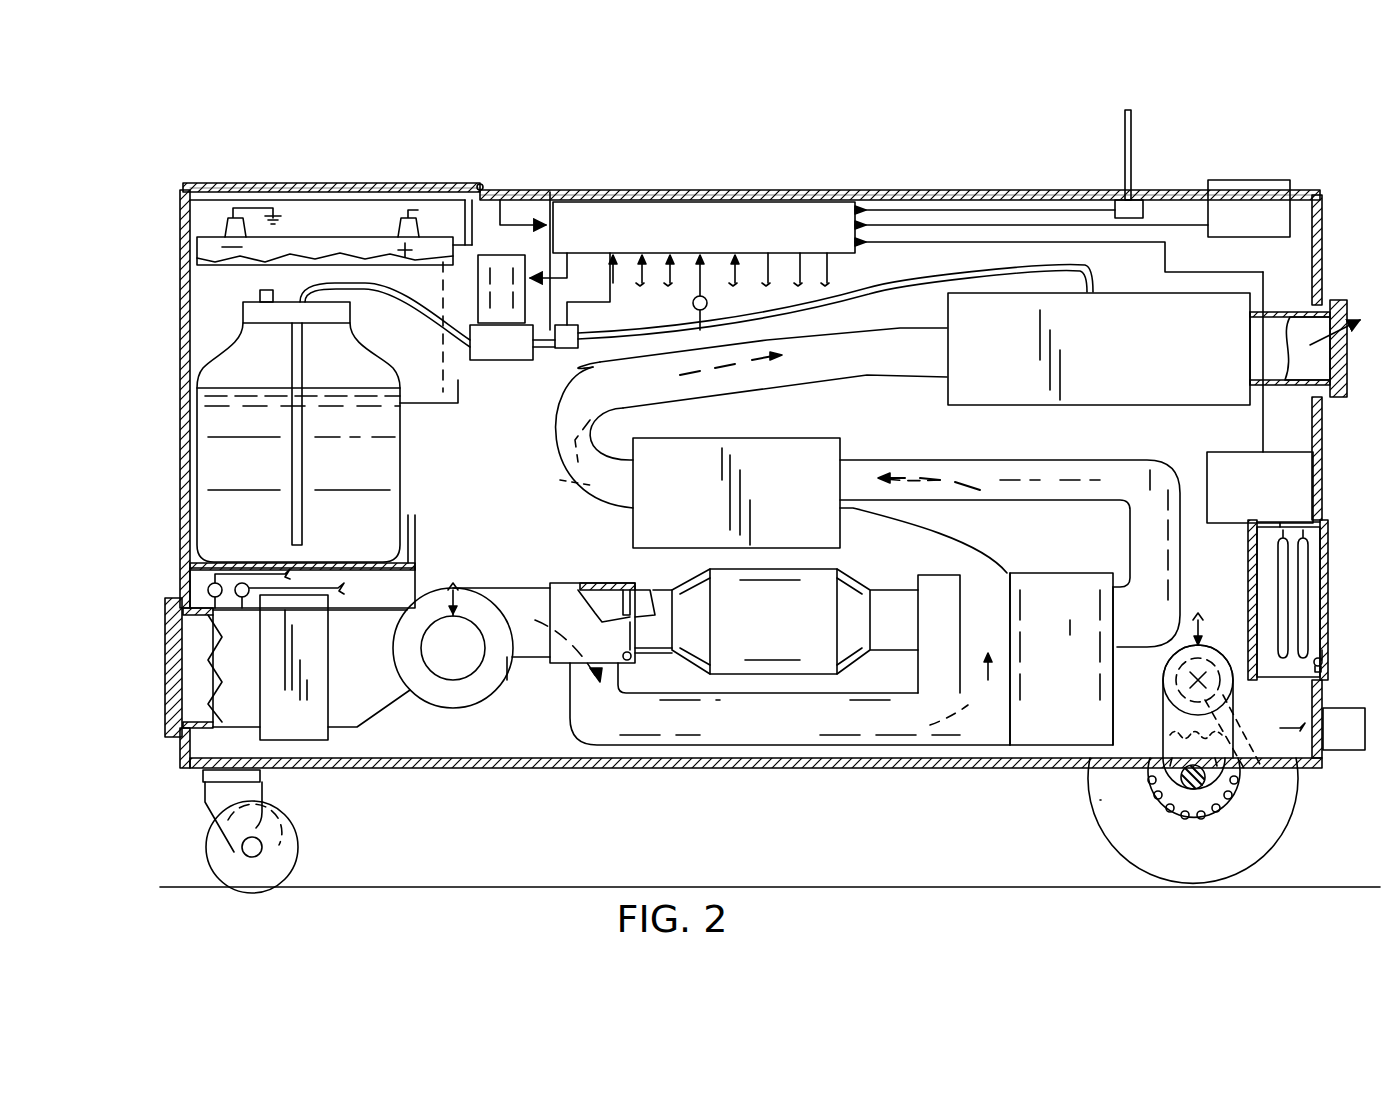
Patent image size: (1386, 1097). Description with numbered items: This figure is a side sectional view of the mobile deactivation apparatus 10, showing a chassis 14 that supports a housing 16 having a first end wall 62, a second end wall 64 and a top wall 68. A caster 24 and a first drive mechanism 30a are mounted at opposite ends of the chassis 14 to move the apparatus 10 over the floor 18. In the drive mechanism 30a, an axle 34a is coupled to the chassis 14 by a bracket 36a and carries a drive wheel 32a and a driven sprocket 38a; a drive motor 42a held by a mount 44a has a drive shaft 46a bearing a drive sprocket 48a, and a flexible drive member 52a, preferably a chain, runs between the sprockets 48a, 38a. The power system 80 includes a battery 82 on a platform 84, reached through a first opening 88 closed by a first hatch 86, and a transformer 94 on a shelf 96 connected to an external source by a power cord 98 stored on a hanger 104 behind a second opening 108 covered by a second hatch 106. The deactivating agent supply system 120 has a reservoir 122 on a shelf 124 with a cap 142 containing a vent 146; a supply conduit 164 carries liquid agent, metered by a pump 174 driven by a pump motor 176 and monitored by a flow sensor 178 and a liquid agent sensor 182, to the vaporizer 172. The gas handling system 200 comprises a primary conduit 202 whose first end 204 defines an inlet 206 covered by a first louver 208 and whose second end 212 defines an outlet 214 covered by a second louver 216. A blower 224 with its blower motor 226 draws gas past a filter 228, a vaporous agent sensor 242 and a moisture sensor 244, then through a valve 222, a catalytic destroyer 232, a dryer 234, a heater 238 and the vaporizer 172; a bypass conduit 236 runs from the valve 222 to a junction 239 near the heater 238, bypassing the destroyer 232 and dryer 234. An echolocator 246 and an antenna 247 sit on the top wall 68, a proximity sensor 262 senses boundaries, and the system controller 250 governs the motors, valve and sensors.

The apparatus 10 is at (145, 147).
The chassis 14 is at (697, 767).
The housing 16 is at (180, 307).
The floor 18 is at (500, 888).
The caster 24 is at (300, 848).
The first drive mechanism 30a is at (1082, 843).
The drive wheel 32a is at (1122, 848).
The axle 34a is at (1181, 778).
The bracket 36a is at (1186, 797).
The driven sprocket 38a is at (1203, 812).
The drive motor 42a is at (1168, 663).
The mount 44a is at (1185, 722).
The drive shaft 46a is at (1172, 690).
The drive sprocket 48a is at (1232, 700).
The drive member 52a is at (1235, 800).
The first end wall 62 is at (185, 363).
The second end wall 64 is at (1322, 405).
The top wall 68 is at (930, 190).
The power system 80 is at (312, 218).
The battery 82 is at (352, 245).
The platform 84 is at (440, 405).
The first hatch 86 is at (412, 180).
The first opening 88 is at (275, 186).
The transformer 94 is at (1228, 457).
The shelf 96 is at (1300, 520).
The power cord 98 is at (1308, 600).
The hanger 104 is at (1255, 562).
The second hatch 106 is at (1320, 650).
The second opening 108 is at (1321, 667).
The deactivating agent supply system 120 is at (633, 318).
The reservoir 122 is at (212, 358).
The shelf 124 is at (220, 560).
The cap 142 is at (340, 313).
The vent 146 is at (262, 298).
The deactivating agent supply conduit 164 is at (860, 290).
The vaporizer 172 is at (1118, 305).
The pump 174 is at (498, 358).
The pump motor 176 is at (500, 268).
The flow sensor 178 is at (575, 345).
The liquid deactivating agent sensor 182 is at (707, 304).
The gas handling system 200 is at (528, 705).
The primary conduit 202 is at (864, 383).
The first end 204 is at (182, 742).
The inlet 206 is at (210, 700).
The first louver 208 is at (210, 673).
The second end 212 is at (1298, 300).
The outlet 214 is at (1317, 363).
The second louver 216 is at (1312, 345).
The valve 222 is at (598, 580).
The blower 224 is at (448, 708).
The blower motor 226 is at (468, 632).
The filter 228 is at (315, 730).
The catalytic destroyer 232 is at (832, 585).
The dryer 234 is at (1030, 597).
The bypass conduit 236 is at (810, 720).
The heater 238 is at (700, 452).
The junction 239 is at (935, 497).
The vaporous deactivating agent sensor 242 is at (242, 582).
The moisture sensor 244 is at (208, 589).
The echolocator 246 is at (1257, 190).
The antenna 247 is at (1133, 135).
The system controller 250 is at (742, 212).
The proximity sensor 262 is at (1350, 740).